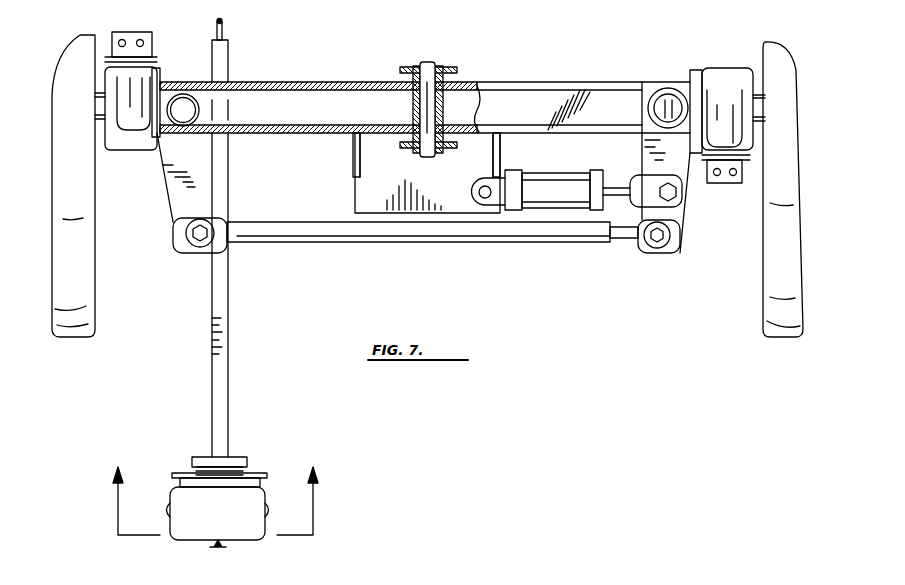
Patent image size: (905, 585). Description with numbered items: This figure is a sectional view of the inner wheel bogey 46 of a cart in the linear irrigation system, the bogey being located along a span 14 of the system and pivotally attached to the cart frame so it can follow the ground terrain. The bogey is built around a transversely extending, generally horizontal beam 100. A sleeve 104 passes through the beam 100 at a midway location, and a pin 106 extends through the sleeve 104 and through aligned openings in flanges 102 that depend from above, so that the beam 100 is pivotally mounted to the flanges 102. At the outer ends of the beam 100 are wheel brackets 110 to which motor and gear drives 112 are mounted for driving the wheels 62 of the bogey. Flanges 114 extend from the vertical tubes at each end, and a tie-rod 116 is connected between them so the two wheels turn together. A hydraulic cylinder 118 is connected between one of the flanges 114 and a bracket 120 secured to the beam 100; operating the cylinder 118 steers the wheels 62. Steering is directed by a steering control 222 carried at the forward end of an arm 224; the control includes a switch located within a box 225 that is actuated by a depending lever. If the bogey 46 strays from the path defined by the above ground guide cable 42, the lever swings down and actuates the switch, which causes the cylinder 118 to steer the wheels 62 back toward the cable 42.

The span 14 is at (217, 489).
The guide cable 42 is at (222, 28).
The inner wheel bogey 46 is at (588, 80).
The wheels 62 is at (92, 312).
The beam 100 is at (530, 85).
The flanges 102 is at (455, 68).
The sleeve 104 is at (413, 98).
The pin 106 is at (430, 62).
The wheel brackets 110 is at (188, 56).
The motor and gear drives 112 is at (120, 145).
The flanges 114 is at (177, 217).
The tie-rod 116 is at (325, 233).
The hydraulic cylinder 118 is at (560, 188).
The bracket 120 is at (360, 192).
The steering control 222 is at (250, 452).
The arms 224 is at (229, 311).
The boxes 225 is at (230, 520).